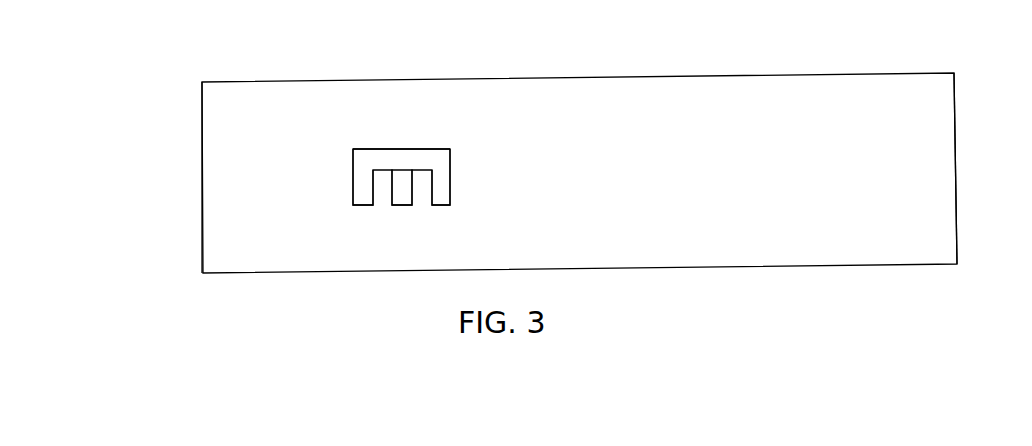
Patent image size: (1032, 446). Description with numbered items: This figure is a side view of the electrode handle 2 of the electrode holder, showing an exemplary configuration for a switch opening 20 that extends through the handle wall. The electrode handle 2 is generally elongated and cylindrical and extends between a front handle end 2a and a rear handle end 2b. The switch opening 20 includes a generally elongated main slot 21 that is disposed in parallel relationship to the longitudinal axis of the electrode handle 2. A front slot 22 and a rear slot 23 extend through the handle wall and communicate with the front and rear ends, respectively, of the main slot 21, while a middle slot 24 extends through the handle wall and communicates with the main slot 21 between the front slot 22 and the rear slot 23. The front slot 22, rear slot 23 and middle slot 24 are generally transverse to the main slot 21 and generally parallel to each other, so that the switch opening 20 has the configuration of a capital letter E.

The electrode handle 2 is at (628, 76).
The front handle end 2a is at (202, 100).
The rear handle end 2b is at (954, 103).
The switch opening 20 is at (408, 150).
The main slot 21 is at (388, 152).
The front slot 22 is at (356, 177).
The rear slot 23 is at (452, 176).
The middle slot 24 is at (400, 189).